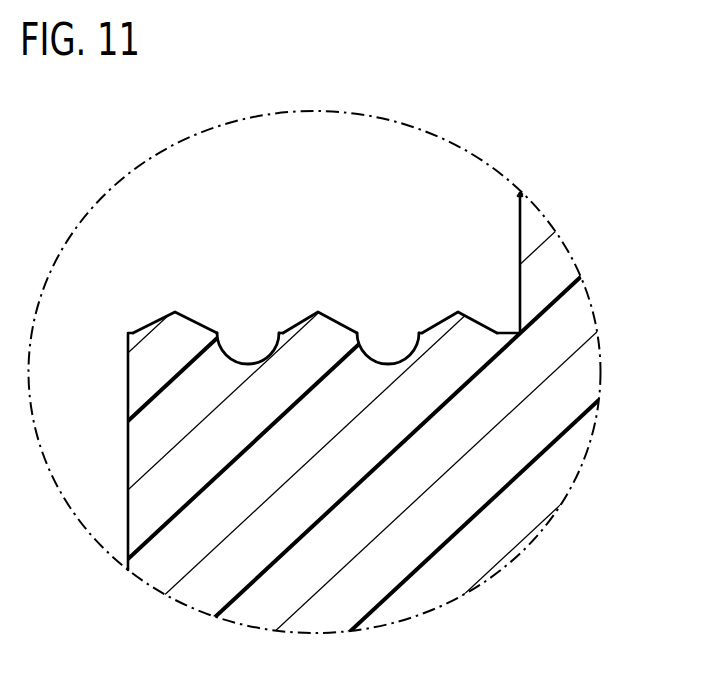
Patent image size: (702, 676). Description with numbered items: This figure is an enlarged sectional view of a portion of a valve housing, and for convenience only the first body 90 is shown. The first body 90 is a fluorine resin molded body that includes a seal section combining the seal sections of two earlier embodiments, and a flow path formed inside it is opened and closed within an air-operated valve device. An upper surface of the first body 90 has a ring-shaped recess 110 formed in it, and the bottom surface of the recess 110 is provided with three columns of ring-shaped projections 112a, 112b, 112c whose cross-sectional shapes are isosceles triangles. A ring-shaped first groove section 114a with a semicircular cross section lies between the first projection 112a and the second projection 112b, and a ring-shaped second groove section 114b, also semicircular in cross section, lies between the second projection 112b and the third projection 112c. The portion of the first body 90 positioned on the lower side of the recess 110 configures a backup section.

The first body 90 is at (567, 382).
The ring-shaped recess 110 is at (400, 213).
The first projection 112a is at (186, 316).
The second projection 112b is at (328, 316).
The third projection 112c is at (451, 316).
The first groove section 114a is at (250, 360).
The second groove section 114b is at (390, 360).